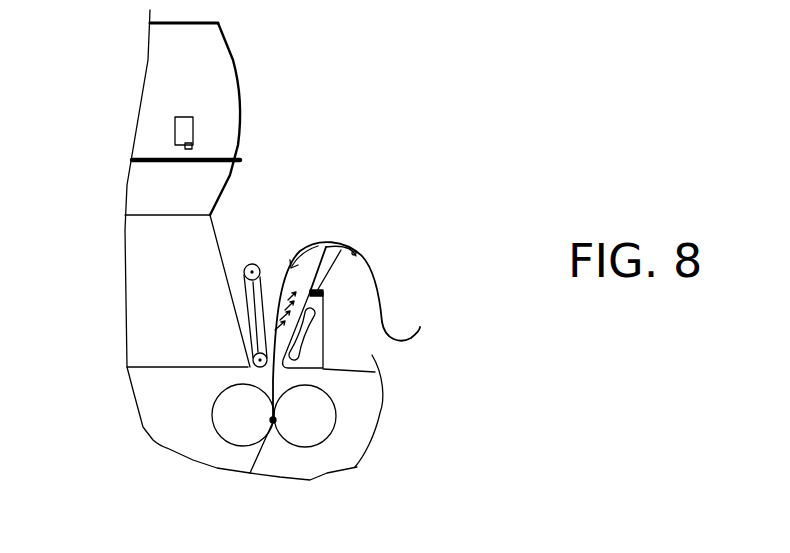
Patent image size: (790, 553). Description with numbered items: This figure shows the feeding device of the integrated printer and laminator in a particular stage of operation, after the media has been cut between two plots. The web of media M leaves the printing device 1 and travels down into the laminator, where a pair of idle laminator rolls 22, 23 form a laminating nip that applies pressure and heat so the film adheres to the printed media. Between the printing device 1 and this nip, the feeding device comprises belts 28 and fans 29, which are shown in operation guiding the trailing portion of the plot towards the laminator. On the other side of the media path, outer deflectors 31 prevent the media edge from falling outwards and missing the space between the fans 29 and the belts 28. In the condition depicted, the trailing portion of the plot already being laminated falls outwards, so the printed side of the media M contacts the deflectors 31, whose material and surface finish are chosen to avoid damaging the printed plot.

The printing device 1 is at (215, 100).
The web of media M is at (320, 240).
The idle laminator roll 22 is at (228, 415).
The idle laminator roll 23 is at (312, 427).
The belts 28 is at (253, 315).
The fans 29 is at (310, 348).
The outer deflectors 31 is at (322, 275).